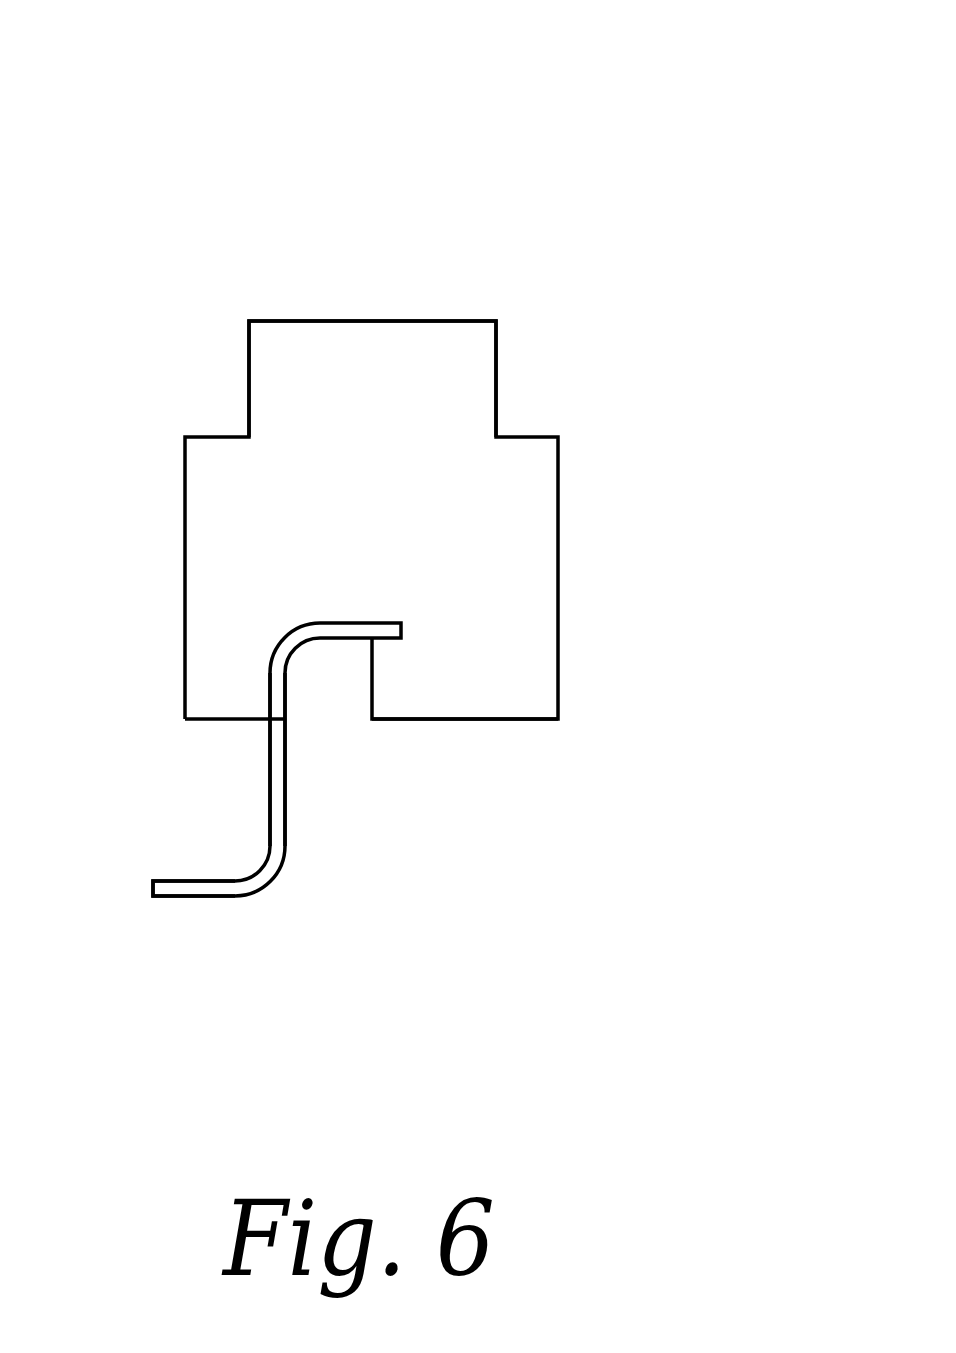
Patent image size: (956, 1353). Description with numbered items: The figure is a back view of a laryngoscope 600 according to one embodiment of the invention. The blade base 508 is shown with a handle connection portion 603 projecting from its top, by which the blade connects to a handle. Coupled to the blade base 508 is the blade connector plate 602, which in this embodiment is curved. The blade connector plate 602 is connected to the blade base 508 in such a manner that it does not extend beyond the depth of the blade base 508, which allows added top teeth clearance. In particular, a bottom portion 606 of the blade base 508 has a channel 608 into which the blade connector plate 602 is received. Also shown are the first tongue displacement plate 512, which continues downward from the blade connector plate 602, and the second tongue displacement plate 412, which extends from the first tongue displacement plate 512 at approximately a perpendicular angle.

The laryngoscope 600 is at (572, 152).
The handle connection portion 603 is at (295, 358).
The blade base 508 is at (537, 589).
The blade connector plate 602 is at (278, 662).
The first tongue displacement plate 512 is at (270, 800).
The channel 608 is at (343, 688).
The bottom portion 606 is at (502, 720).
The second tongue displacement plate 412 is at (178, 895).